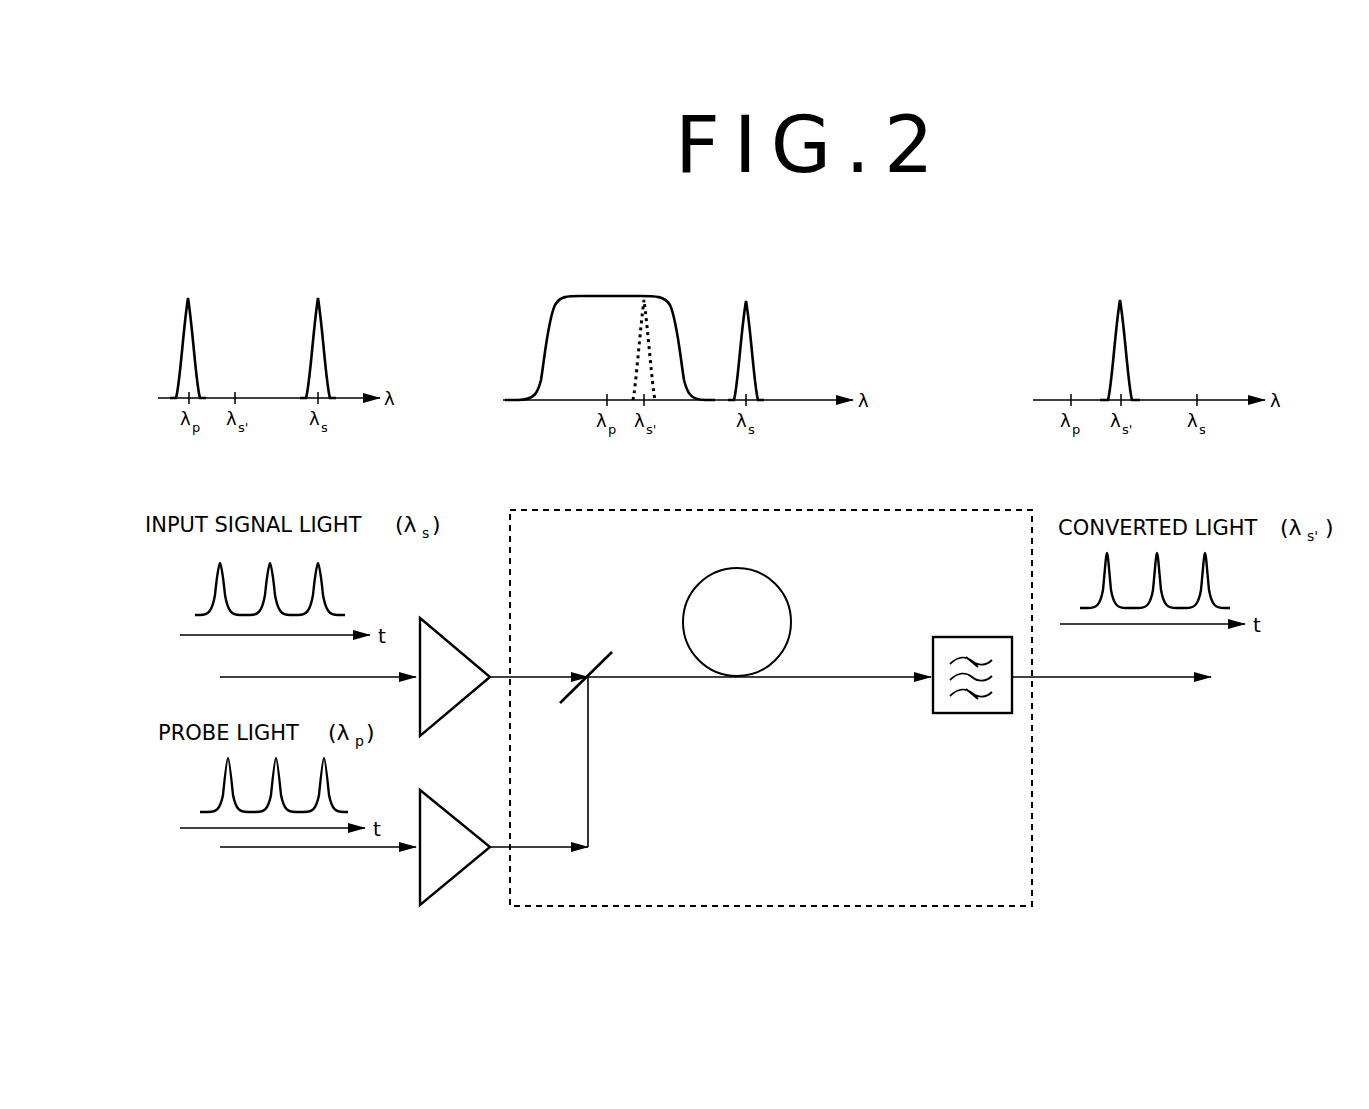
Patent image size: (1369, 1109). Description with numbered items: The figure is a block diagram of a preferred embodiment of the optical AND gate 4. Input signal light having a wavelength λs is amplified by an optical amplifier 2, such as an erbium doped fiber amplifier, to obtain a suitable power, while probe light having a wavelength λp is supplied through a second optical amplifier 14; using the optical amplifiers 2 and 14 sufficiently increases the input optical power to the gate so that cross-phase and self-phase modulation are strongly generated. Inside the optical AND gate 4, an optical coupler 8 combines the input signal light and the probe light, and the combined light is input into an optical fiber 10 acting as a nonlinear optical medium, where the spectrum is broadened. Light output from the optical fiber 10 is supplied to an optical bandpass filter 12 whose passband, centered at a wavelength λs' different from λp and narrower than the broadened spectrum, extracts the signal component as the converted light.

The optical amplifier 2 is at (458, 652).
The optical amplifier 14 is at (458, 822).
The optical coupler 8 is at (600, 660).
The optical fiber 10 is at (791, 619).
The optical bandpass filter 12 is at (968, 637).
The optical AND gate 4 is at (772, 908).